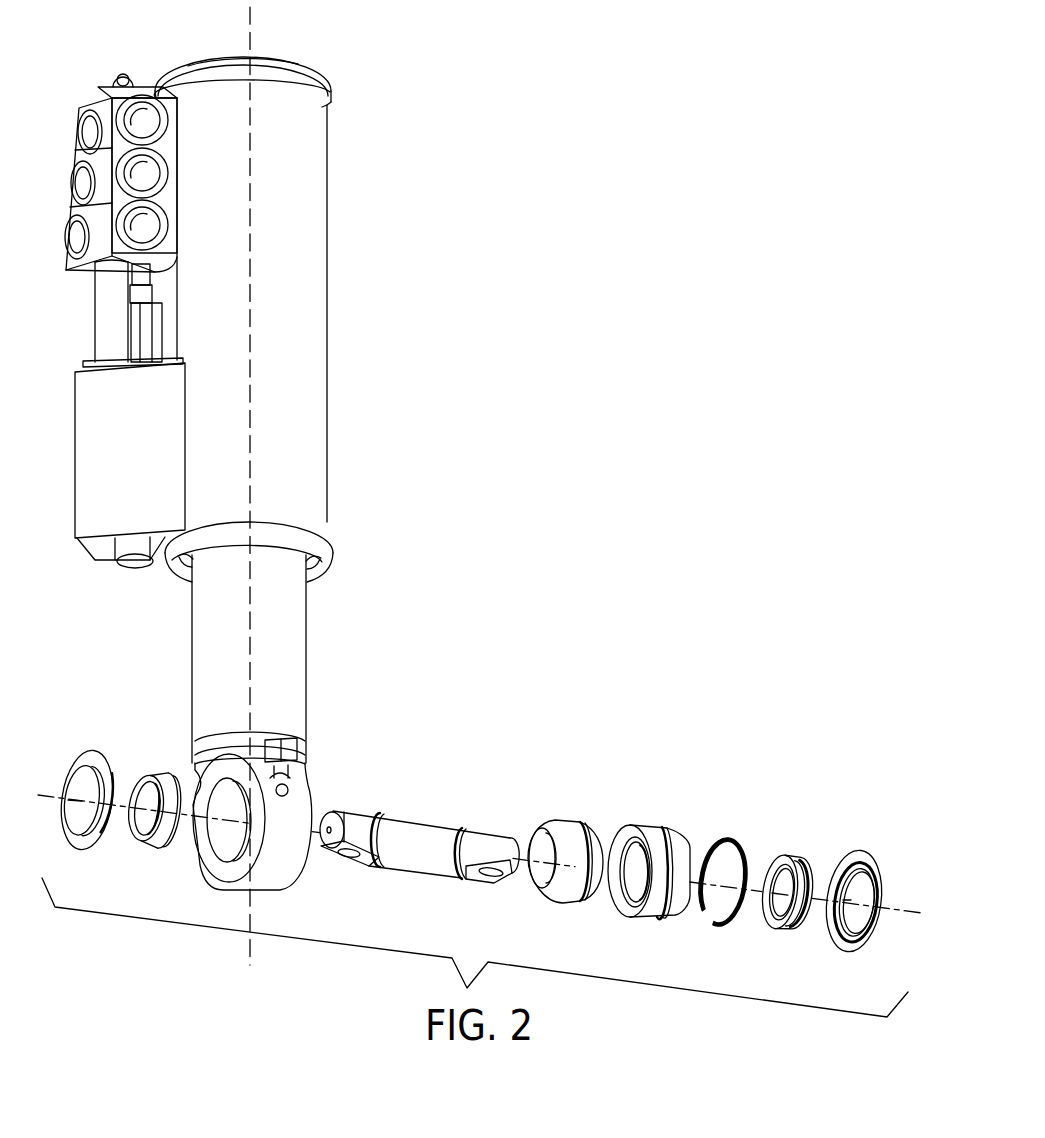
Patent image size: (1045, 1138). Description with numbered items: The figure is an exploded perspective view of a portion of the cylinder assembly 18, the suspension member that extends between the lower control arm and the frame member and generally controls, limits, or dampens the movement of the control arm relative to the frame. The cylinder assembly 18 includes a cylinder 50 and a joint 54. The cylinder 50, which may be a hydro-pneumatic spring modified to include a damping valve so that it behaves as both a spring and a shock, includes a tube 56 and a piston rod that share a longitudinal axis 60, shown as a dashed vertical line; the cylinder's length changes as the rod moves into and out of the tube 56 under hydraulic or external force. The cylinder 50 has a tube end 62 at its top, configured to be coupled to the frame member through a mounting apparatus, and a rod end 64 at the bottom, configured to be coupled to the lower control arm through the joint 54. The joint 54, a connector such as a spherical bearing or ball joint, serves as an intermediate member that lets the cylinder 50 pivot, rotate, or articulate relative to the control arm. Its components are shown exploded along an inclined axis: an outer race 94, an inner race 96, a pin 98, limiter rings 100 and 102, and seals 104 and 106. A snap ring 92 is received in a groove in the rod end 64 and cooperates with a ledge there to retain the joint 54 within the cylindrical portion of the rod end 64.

The cylinder assembly 18 is at (551, 192).
The cylinder 50 is at (368, 401).
The joint 54 is at (295, 637).
The tube 56 is at (315, 293).
The longitudinal axis 60 is at (252, 13).
The tube end 62 is at (322, 108).
The rod end 64 is at (332, 776).
The snap ring 92 is at (733, 838).
The outer race 94 is at (650, 832).
The inner race 96 is at (568, 828).
The pin 98 is at (427, 825).
The limiter ring 100 is at (797, 853).
The limiter ring 102 is at (160, 770).
The seal 104 is at (863, 850).
The seal 106 is at (97, 752).